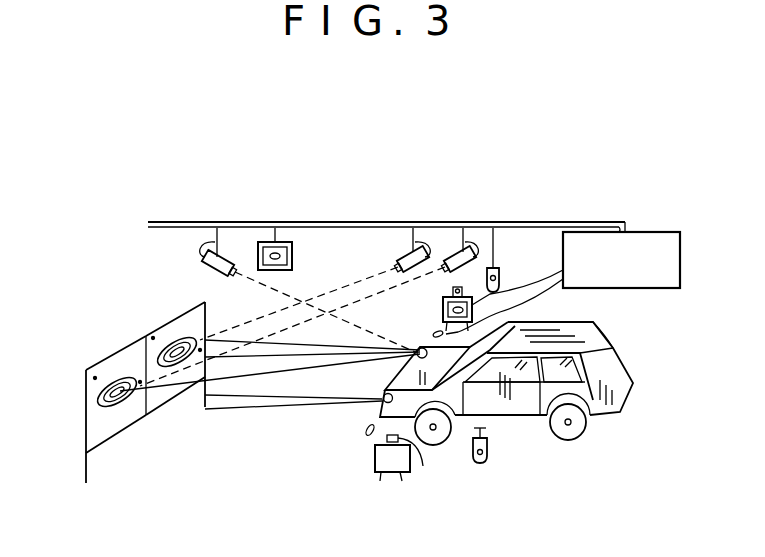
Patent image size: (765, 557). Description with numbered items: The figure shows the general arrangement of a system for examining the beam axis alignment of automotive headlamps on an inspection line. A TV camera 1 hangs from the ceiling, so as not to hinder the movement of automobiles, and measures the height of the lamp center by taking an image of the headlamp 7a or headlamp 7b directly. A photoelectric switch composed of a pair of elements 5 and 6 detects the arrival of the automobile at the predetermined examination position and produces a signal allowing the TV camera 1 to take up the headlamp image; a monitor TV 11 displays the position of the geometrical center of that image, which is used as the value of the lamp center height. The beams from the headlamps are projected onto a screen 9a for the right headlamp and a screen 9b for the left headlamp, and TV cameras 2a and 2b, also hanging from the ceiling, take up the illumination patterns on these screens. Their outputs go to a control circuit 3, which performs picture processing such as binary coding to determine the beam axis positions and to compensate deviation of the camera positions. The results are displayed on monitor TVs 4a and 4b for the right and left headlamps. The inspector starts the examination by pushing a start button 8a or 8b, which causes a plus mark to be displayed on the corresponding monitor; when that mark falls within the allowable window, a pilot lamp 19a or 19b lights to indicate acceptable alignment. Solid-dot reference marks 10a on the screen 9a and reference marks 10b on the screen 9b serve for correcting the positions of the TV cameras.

The TV camera 1 is at (226, 262).
The TV camera 2a is at (407, 253).
The TV camera 2b is at (447, 248).
The control circuit 3 is at (639, 232).
The monitor TV 4a is at (443, 306).
The monitor TV 4b is at (375, 462).
The photoelectric switch element 5 is at (433, 334).
The photoelectric switch element 6 is at (364, 438).
The headlamp 7a is at (412, 358).
The headlamp 7b is at (380, 409).
The start button 8a is at (500, 276).
The start button 8b is at (490, 453).
The screen 9a is at (180, 316).
The screen 9b is at (100, 364).
The reference marks 10a is at (152, 336).
The reference marks 10b is at (94, 379).
The monitor TV 11 is at (293, 257).
The pilot lamp 19a is at (453, 292).
The pilot lamp 19b is at (420, 463).